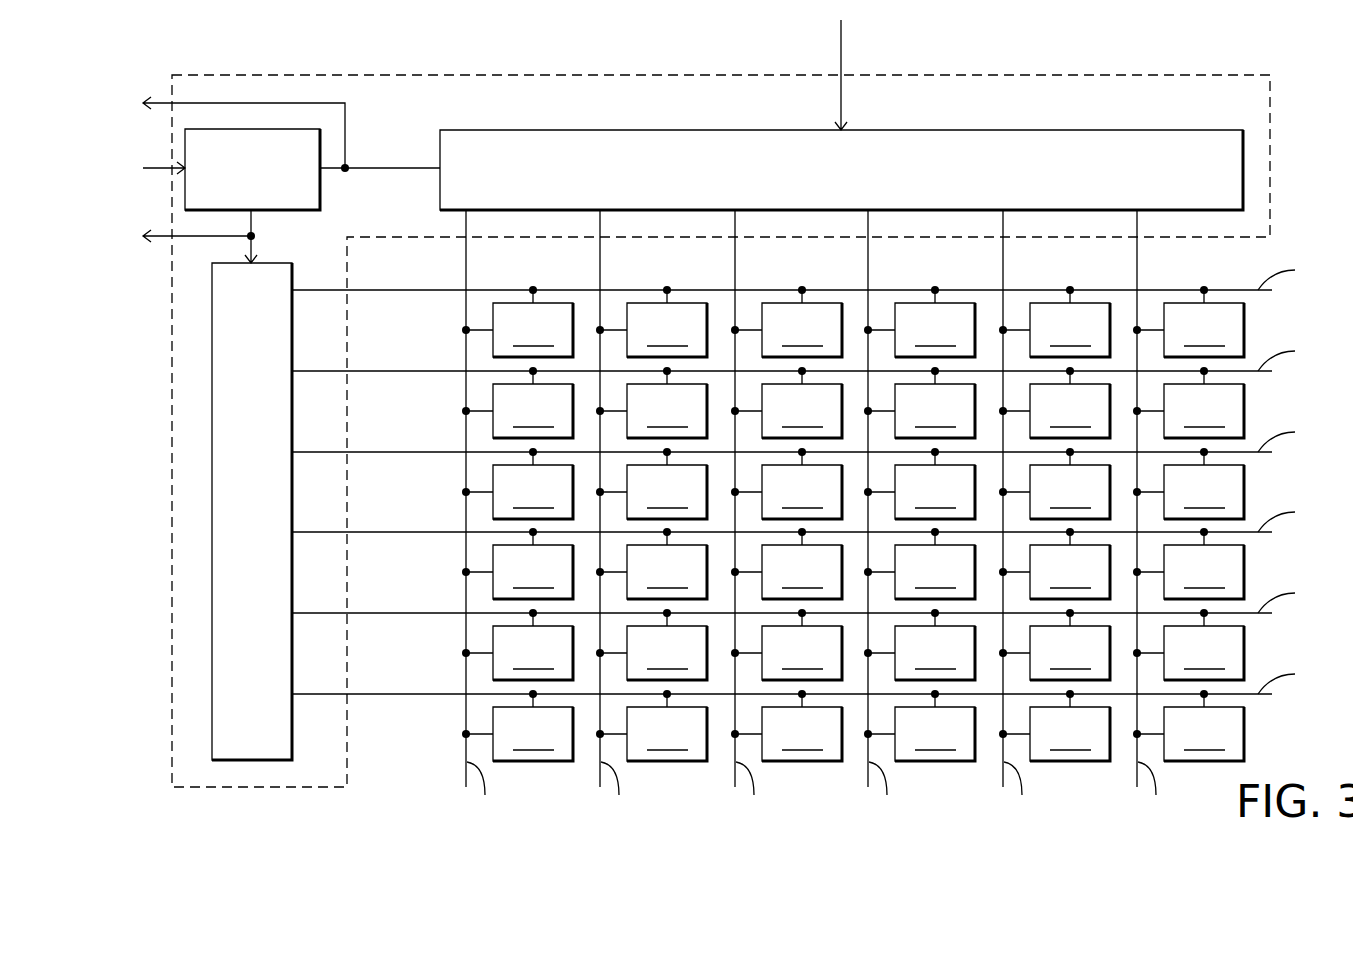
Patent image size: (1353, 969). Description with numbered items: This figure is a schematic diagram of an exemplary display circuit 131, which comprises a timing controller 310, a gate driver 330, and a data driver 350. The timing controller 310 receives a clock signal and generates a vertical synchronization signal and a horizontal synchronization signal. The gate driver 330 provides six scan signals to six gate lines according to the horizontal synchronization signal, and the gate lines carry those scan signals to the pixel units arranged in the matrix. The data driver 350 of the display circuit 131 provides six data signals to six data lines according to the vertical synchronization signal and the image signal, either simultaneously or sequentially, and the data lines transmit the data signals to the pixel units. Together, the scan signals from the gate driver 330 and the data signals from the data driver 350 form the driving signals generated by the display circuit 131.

The display circuit 131 is at (1271, 115).
The timing controller 310 is at (320, 190).
The gate driver 330 is at (212, 511).
The data driver 350 is at (1243, 170).